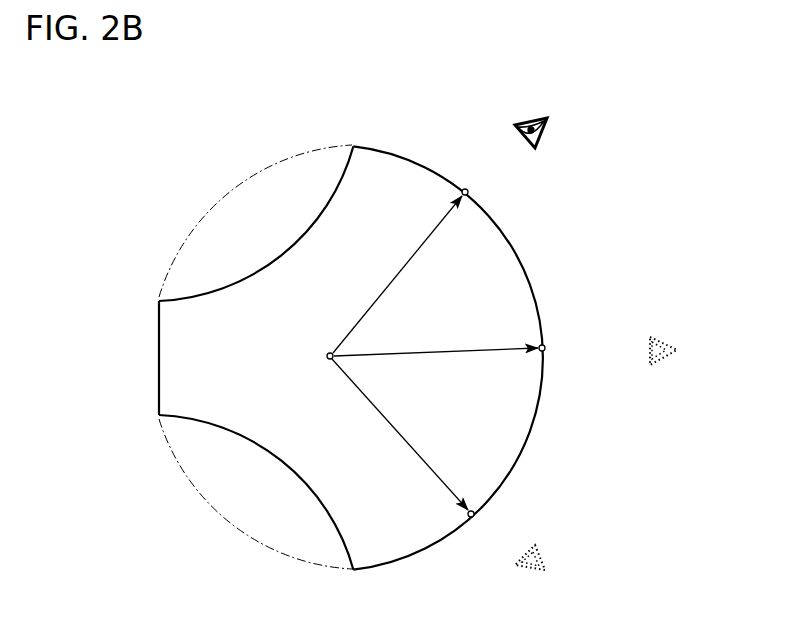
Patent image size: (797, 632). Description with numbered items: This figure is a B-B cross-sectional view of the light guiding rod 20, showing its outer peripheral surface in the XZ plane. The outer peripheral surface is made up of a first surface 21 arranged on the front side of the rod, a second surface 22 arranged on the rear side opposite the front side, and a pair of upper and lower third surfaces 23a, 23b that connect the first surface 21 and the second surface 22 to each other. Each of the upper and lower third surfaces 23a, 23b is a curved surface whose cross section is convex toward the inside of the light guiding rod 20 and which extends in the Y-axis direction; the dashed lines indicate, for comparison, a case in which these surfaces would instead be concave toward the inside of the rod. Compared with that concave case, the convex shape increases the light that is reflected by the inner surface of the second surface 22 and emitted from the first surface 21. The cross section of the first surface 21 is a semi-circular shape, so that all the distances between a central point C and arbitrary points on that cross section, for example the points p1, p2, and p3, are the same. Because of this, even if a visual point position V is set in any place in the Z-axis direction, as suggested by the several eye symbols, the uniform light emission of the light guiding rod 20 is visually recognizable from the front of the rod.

The light guiding rod 20 is at (472, 112).
The first surface 21 is at (531, 284).
The second surface 22 is at (157, 353).
The upper third surface 23a is at (290, 248).
The lower third surface 23b is at (303, 485).
The central point C is at (328, 350).
The arbitrary point p1 is at (470, 190).
The arbitrary point p2 is at (546, 348).
The arbitrary point p3 is at (475, 516).
The visual point position V is at (547, 118).